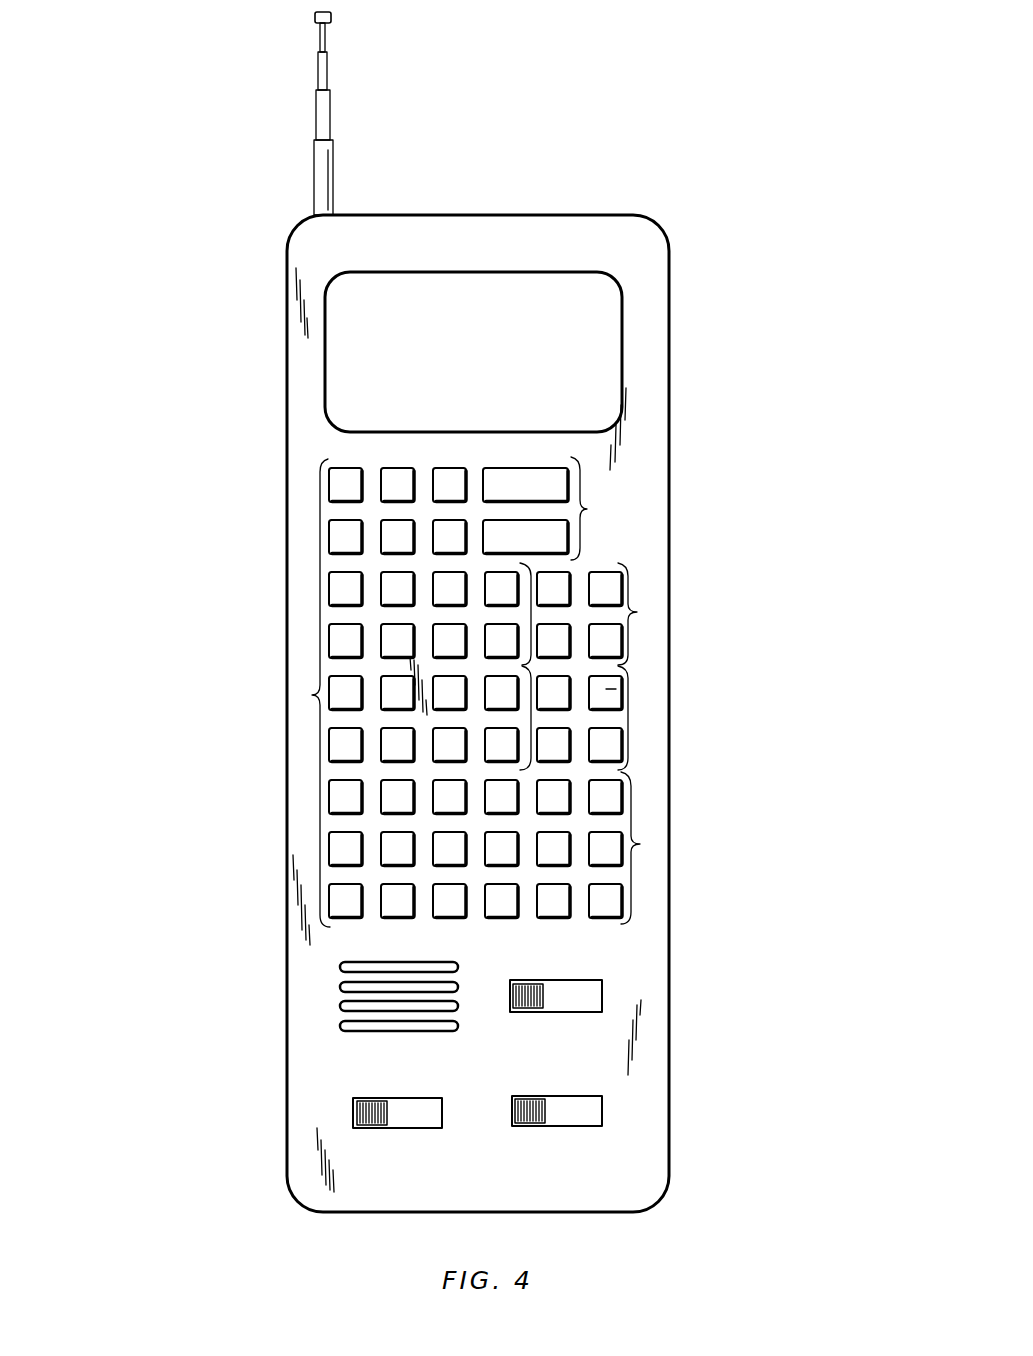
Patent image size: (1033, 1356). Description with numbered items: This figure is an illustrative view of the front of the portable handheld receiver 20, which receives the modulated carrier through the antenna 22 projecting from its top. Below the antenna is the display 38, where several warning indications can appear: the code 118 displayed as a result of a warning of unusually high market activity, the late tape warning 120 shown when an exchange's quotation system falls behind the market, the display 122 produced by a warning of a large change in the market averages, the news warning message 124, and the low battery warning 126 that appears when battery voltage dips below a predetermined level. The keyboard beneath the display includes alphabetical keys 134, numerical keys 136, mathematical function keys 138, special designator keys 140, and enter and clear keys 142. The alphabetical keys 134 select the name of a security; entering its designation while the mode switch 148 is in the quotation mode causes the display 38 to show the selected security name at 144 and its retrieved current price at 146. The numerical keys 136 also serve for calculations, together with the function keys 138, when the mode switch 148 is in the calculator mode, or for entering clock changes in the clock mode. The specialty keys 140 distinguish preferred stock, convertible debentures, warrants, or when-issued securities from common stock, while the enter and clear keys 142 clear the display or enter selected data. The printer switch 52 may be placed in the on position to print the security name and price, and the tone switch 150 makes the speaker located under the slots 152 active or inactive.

The portable handheld receiver 20 is at (513, 216).
The antenna 22 is at (330, 114).
The display 38 is at (600, 297).
The printer switch 52 is at (353, 1112).
The high market activity warning code 118 is at (347, 366).
The late tape warning display 120 is at (408, 357).
The large market change warning display 122 is at (487, 365).
The news warning display 124 is at (543, 357).
The low battery warning display 126 is at (590, 365).
The alphabetical keys 134 is at (312, 695).
The numerical keys 136 is at (640, 844).
The mathematical function keys 138 is at (637, 612).
The special designator keys 140 is at (531, 665).
The enter and clear keys 142 is at (587, 509).
The selected security name display 144 is at (418, 300).
The current price display 146 is at (513, 330).
The mode switch 148 is at (602, 1108).
The tone switch 150 is at (602, 995).
The speaker slots 152 is at (338, 987).